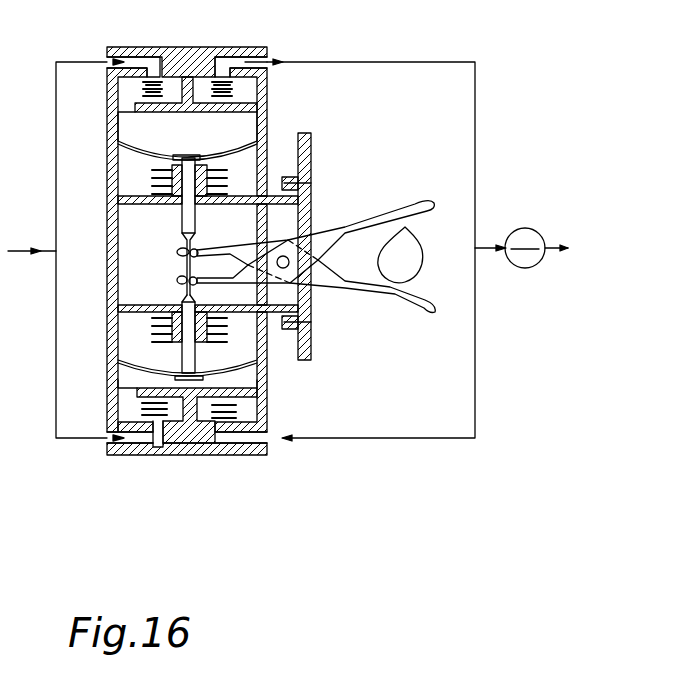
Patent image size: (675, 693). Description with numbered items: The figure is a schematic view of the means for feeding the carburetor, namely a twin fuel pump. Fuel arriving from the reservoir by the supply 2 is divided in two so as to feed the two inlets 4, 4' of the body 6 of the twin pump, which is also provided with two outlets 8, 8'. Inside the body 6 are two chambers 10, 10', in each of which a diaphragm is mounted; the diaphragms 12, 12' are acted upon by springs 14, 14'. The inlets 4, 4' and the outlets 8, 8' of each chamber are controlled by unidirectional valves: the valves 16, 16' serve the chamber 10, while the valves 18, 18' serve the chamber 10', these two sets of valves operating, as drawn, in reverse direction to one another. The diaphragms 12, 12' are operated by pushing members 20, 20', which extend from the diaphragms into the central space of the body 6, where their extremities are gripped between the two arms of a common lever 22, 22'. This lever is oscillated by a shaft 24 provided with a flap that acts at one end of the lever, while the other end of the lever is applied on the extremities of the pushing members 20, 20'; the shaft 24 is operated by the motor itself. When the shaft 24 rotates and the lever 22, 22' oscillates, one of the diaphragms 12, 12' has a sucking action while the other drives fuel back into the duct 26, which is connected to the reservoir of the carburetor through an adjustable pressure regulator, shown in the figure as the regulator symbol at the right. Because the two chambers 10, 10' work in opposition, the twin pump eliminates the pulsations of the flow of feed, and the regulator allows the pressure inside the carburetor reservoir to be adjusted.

The supply 2 is at (45, 255).
The inlet 4 is at (124, 51).
The inlet 4' is at (113, 459).
The body 6 is at (265, 146).
The outlet 8 is at (256, 56).
The outlet 8' is at (254, 453).
The chamber 10 is at (167, 125).
The chamber 10' is at (168, 348).
The diaphragm 12 is at (165, 158).
The diaphragm 12' is at (166, 370).
The spring 14 is at (202, 199).
The spring 14' is at (205, 330).
The unidirectional valve 16 is at (159, 59).
The unidirectional valve 16' is at (257, 103).
The unidirectional valve 18 is at (148, 447).
The unidirectional valve 18' is at (257, 408).
The pushing member 20 is at (169, 226).
The pushing member 20' is at (162, 334).
The common lever 22 is at (315, 226).
The common lever 22' is at (316, 295).
The shaft 24 is at (415, 263).
The duct 26 is at (484, 252).